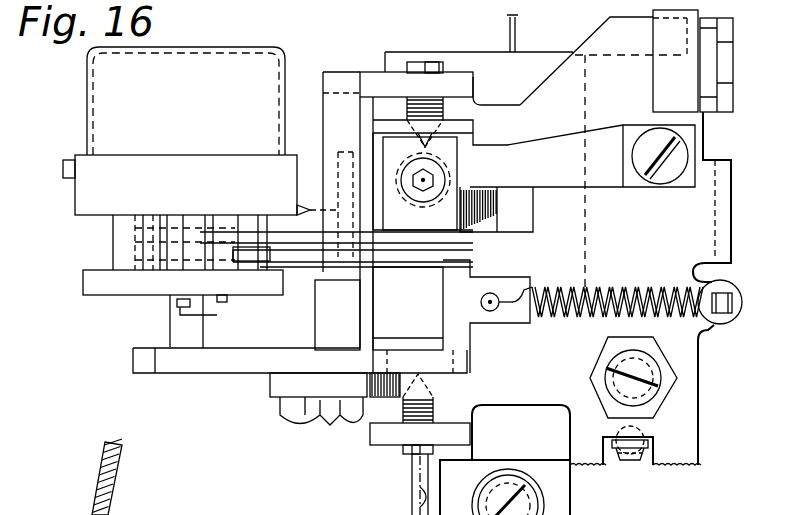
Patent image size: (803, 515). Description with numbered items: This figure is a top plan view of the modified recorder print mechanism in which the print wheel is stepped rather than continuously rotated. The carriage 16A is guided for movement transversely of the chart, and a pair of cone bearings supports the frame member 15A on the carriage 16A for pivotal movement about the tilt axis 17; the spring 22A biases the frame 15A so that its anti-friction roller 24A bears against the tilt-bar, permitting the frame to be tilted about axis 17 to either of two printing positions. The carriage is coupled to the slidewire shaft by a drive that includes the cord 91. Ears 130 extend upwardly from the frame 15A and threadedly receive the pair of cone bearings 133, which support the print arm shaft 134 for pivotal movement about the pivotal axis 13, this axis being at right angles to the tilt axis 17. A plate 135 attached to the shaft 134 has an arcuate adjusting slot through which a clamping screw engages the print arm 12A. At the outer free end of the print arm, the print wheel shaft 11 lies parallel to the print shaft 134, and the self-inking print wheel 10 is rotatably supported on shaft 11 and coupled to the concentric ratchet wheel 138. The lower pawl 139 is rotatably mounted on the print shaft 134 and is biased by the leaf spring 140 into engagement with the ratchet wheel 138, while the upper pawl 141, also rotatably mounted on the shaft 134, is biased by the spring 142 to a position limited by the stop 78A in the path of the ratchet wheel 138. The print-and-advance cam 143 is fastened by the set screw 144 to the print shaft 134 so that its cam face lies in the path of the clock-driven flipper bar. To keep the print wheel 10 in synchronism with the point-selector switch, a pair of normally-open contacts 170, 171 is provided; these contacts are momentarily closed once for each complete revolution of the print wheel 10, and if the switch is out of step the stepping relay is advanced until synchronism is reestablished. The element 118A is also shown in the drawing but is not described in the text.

The print wheel 10 is at (194, 198).
The print wheel shaft 11 is at (186, 68).
The print arm 12A is at (238, 374).
The pivotal axis 13 is at (425, 62).
The frame member 15A is at (688, 403).
The carriage 16A is at (538, 475).
The tilt axis 17 is at (57, 206).
The spring 22A is at (638, 456).
The anti-friction roller 24A is at (690, 102).
The stop 78A is at (340, 108).
The cord 91 is at (518, 32).
The arm 118A is at (75, 477).
The ears 130 is at (382, 82).
The cone bearings 133 is at (445, 71).
The print arm shaft 134 is at (436, 317).
The plate 135 is at (280, 384).
The ratchet wheel 138 is at (125, 243).
The lower pawl 139 is at (289, 238).
The leaf spring 140 is at (597, 143).
The upper pawl 141 is at (297, 254).
The spring 142 is at (622, 287).
The print-and-advance cam 143 is at (514, 222).
The set screw 144 is at (436, 180).
The normally-open contact 170 is at (177, 302).
The normally-open contact 171 is at (222, 302).